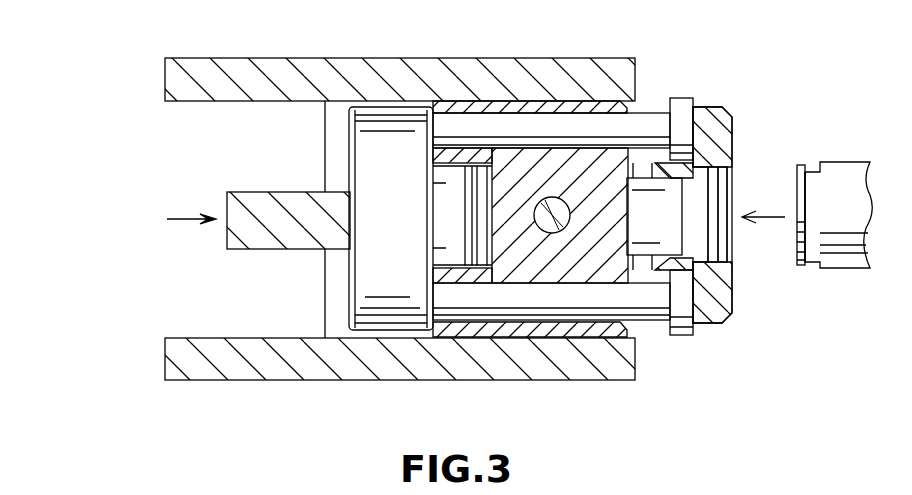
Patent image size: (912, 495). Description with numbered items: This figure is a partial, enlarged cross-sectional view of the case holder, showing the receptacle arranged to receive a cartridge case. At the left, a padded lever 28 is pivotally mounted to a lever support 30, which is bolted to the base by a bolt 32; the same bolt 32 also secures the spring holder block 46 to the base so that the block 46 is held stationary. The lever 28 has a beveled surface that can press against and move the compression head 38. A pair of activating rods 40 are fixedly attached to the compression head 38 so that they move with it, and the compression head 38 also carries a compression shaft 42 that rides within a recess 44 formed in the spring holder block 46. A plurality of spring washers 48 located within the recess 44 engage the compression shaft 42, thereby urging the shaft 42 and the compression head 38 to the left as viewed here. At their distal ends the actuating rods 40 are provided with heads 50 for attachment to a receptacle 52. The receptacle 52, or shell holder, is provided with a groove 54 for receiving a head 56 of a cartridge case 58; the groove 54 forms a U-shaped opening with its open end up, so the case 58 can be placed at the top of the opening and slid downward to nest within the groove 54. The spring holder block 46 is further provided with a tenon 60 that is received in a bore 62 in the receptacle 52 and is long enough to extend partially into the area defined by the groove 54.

The padded lever 28 is at (268, 192).
The lever support 30 is at (237, 381).
The bolt 32 is at (553, 235).
The compression head 38 is at (349, 284).
The activating rods 40 is at (548, 104).
The compression shaft 42 is at (465, 300).
The recess 44 is at (468, 240).
The spring holder block 46 is at (600, 98).
The spring washers 48 is at (490, 118).
The heads 50 is at (683, 98).
The receptacle 52 is at (732, 318).
The groove 54 is at (722, 240).
The head 56 is at (801, 165).
The cartridge case 58 is at (856, 162).
The tenon 60 is at (642, 258).
The bore 62 is at (712, 190).